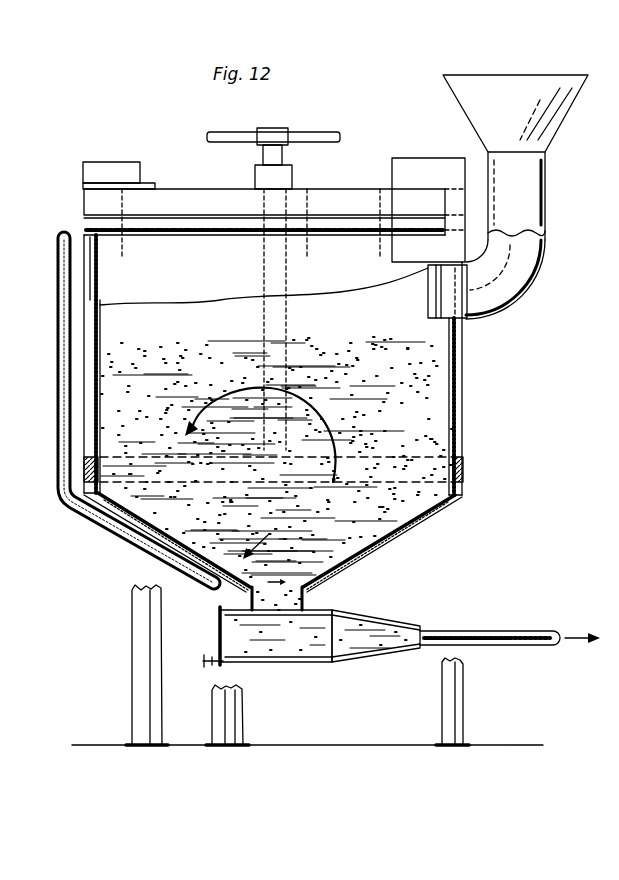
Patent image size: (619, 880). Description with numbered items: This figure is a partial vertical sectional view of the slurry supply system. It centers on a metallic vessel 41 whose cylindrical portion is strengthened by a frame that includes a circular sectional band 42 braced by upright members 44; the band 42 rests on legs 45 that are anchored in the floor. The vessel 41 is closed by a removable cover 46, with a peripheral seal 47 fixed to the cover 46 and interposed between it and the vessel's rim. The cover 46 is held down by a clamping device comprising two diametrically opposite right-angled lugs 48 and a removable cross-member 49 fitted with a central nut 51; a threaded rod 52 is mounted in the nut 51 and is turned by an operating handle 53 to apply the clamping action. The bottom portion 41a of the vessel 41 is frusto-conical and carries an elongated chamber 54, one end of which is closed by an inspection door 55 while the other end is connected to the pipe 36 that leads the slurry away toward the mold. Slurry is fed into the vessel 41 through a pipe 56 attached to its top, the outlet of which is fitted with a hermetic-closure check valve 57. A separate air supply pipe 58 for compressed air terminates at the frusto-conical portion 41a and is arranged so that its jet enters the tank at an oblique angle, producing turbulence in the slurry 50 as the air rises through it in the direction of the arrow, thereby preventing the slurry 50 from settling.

The pipe 36 is at (526, 646).
The metallic vessel 41 is at (464, 413).
The bottom portion 41a is at (393, 528).
The circular sectional band 42 is at (464, 466).
The upright members 44 is at (456, 392).
The legs 45 is at (132, 647).
The removable cover 46 is at (84, 226).
The peripheral seal 47 is at (82, 238).
The right-angled lugs 48 is at (83, 170).
The removable cross-member 49 is at (200, 189).
The slurry 50 is at (430, 353).
The central nut 51 is at (292, 181).
The threaded rod 52 is at (283, 160).
The operating handle 53 is at (338, 136).
The chamber 54 is at (294, 664).
The inspection door 55 is at (218, 627).
The pipe 56 is at (546, 192).
The check valve 57 is at (428, 303).
The air supply pipe 58 is at (98, 524).